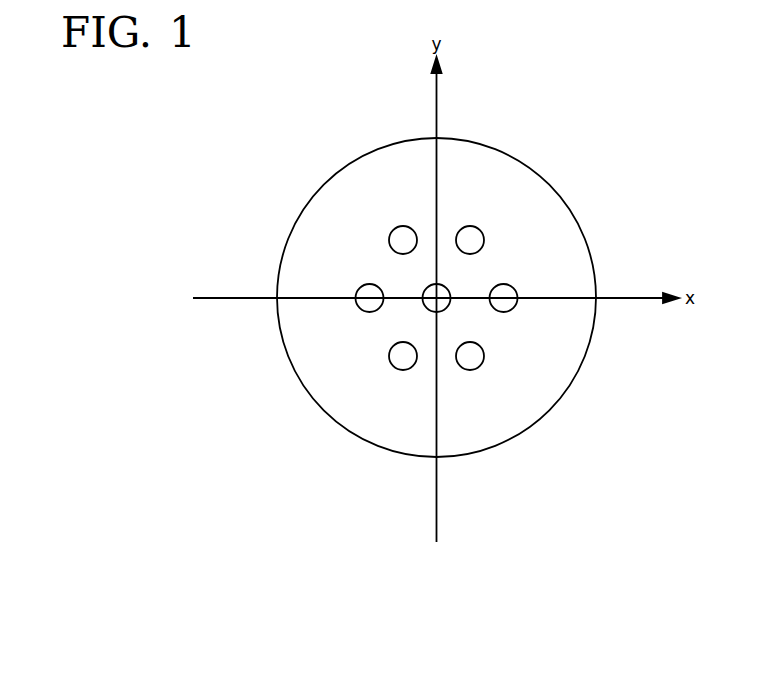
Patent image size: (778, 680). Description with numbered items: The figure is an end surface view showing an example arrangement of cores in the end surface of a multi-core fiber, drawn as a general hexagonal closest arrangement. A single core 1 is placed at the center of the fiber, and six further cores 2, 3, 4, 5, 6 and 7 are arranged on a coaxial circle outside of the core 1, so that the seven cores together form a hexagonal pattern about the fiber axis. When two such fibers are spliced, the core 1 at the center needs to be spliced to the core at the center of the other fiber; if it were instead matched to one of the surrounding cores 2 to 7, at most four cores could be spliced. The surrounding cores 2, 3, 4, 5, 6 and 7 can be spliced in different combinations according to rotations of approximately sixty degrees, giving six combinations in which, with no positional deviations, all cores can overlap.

The core 1 is at (442, 290).
The core 2 is at (509, 290).
The core 3 is at (475, 232).
The core 4 is at (408, 232).
The core 5 is at (375, 290).
The core 6 is at (408, 348).
The core 7 is at (475, 348).